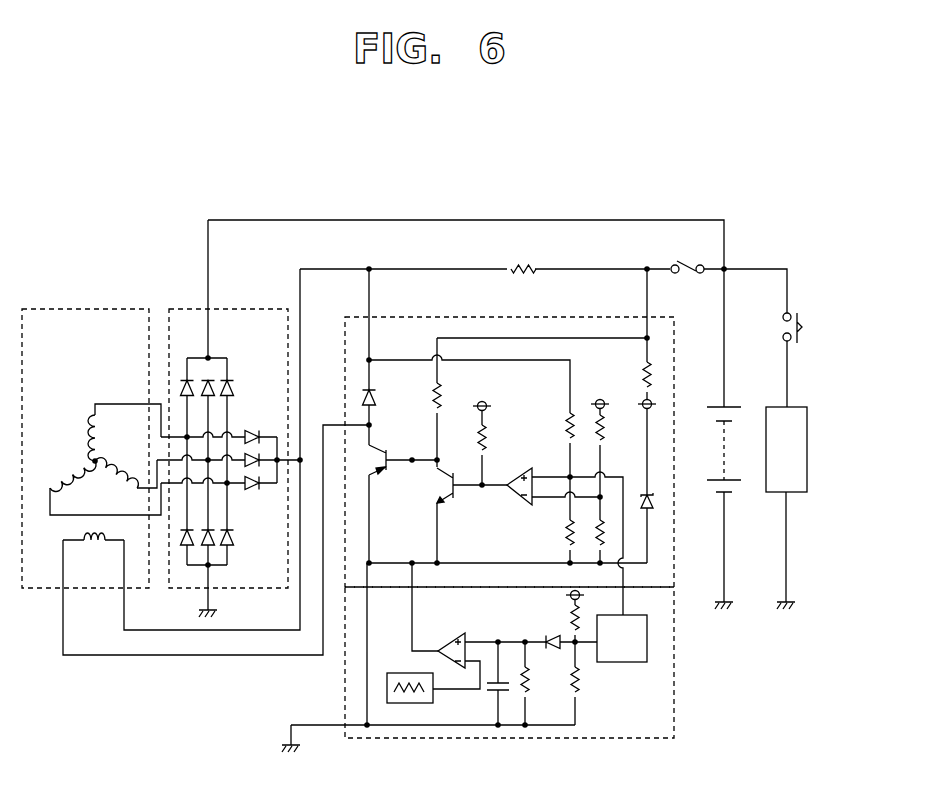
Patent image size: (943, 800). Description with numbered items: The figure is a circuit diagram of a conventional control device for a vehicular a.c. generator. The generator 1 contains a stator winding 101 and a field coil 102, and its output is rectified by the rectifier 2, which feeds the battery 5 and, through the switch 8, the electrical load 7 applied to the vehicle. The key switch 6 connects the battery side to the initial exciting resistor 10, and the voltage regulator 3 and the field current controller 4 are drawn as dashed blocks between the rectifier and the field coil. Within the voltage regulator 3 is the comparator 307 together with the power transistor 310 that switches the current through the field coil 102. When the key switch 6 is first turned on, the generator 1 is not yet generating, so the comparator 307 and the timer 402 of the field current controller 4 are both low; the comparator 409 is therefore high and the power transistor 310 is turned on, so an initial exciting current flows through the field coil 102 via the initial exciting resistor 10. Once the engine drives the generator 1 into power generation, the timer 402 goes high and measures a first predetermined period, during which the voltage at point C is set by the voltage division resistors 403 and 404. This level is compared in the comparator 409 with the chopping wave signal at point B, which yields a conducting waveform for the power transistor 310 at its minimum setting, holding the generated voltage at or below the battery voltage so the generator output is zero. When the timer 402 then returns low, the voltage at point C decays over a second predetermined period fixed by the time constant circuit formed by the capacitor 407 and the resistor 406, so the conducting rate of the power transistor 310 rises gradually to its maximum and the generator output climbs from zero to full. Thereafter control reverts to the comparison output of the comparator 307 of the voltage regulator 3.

The generator 1 is at (78, 309).
The rectifier 2 is at (246, 309).
The voltage regulator 3 is at (485, 316).
The field current controller 4 is at (673, 683).
The battery 5 is at (732, 490).
The key switch 6 is at (690, 277).
The electrical load 7 is at (793, 494).
The switch 8 is at (800, 330).
The initial exciting resistor 10 is at (522, 265).
The stator winding 101 is at (88, 420).
The field coil 102 is at (94, 546).
The comparator 307 is at (510, 477).
The power transistor 310 is at (378, 473).
The timer 402 is at (605, 662).
The voltage division resistor 403 is at (570, 615).
The voltage division resistor 404 is at (581, 696).
The resistor 406 is at (532, 690).
The capacitor 407 is at (490, 698).
The comparator 409 is at (450, 638).
The point B is at (460, 689).
The point C is at (496, 640).